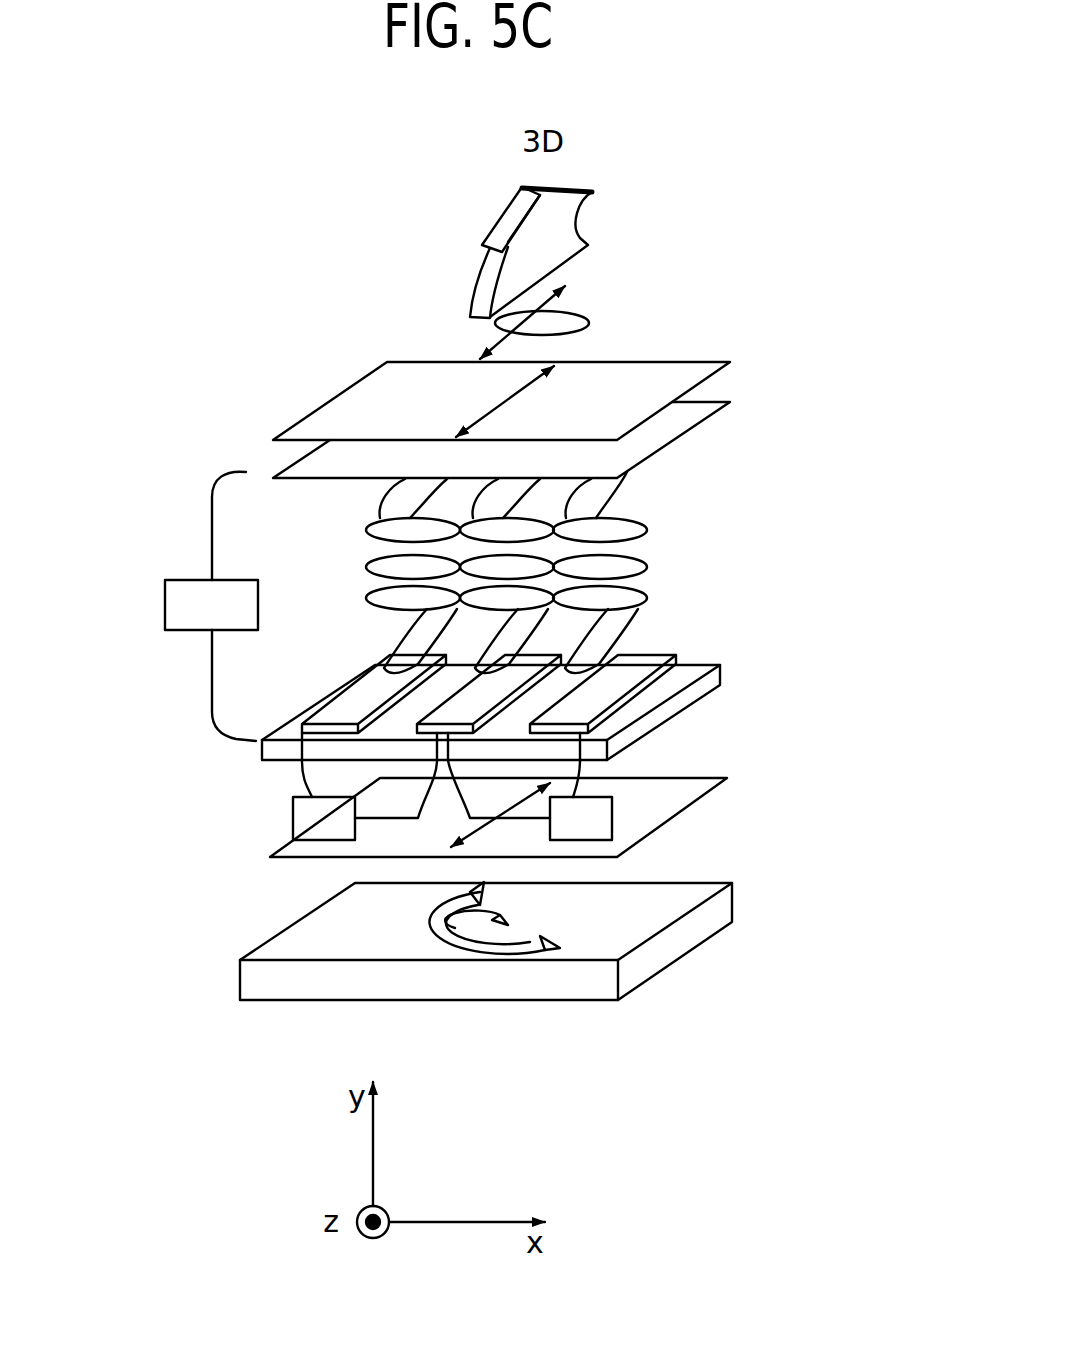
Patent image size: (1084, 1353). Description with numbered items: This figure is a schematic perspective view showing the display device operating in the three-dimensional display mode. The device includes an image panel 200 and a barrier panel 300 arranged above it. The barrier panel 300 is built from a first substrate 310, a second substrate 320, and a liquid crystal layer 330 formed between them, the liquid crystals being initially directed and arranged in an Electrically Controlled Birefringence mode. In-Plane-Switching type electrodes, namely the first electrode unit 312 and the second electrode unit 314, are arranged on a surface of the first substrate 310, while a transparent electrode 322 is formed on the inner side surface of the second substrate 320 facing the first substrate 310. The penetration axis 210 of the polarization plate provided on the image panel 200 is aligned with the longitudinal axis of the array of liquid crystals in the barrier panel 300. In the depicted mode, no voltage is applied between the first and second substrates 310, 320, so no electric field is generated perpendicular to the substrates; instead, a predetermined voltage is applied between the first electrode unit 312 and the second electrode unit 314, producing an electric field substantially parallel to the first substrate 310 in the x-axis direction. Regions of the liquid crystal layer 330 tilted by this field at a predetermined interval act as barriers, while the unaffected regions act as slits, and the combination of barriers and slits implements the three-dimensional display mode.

The image panel 200 is at (263, 980).
The penetration axis 210 is at (513, 860).
The barrier panel 300 is at (160, 450).
The first substrate 310 is at (670, 798).
The first electrode unit 312 is at (663, 645).
The second electrode unit 314 is at (443, 727).
The second substrate 320 is at (697, 370).
The transparent electrode 322 is at (677, 422).
The liquid crystal layer 330 is at (657, 588).